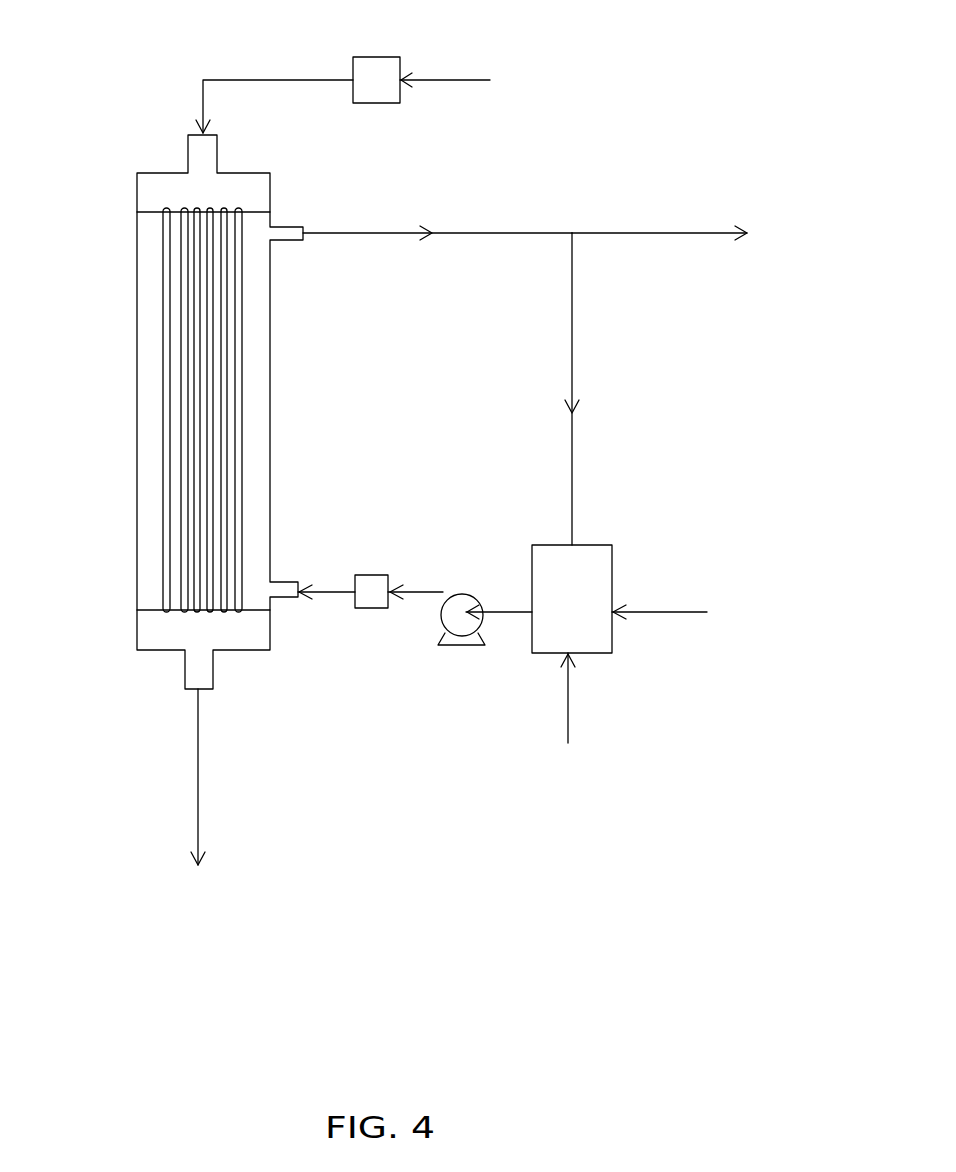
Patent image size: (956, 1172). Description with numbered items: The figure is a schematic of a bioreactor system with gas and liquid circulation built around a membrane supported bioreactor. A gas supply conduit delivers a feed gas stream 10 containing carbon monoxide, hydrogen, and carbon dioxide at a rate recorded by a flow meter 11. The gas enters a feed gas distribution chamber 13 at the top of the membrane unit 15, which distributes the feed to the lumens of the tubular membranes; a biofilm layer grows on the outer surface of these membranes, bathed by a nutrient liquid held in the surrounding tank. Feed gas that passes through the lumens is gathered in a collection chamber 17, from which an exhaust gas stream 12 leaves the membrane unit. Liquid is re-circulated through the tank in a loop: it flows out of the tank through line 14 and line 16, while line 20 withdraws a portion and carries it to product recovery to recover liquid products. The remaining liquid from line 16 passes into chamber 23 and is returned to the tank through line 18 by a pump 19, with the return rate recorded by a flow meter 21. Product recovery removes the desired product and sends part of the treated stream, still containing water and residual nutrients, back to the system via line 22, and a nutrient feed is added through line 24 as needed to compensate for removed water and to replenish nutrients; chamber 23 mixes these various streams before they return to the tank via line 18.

The feed gas stream 10 is at (497, 81).
The flow meter 11 is at (380, 57).
The exhaust gas stream 12 is at (198, 819).
The feed gas distribution chamber 13 is at (152, 197).
The line 14 is at (437, 219).
The membrane unit 15 is at (136, 472).
The line 16 is at (597, 389).
The collection chamber 17 is at (232, 630).
The line 18 is at (417, 583).
The pump 19 is at (470, 594).
The line 20 is at (717, 250).
The flow meter 21 is at (375, 575).
The line 22 is at (734, 634).
The chamber 23 is at (612, 578).
The line 24 is at (641, 722).